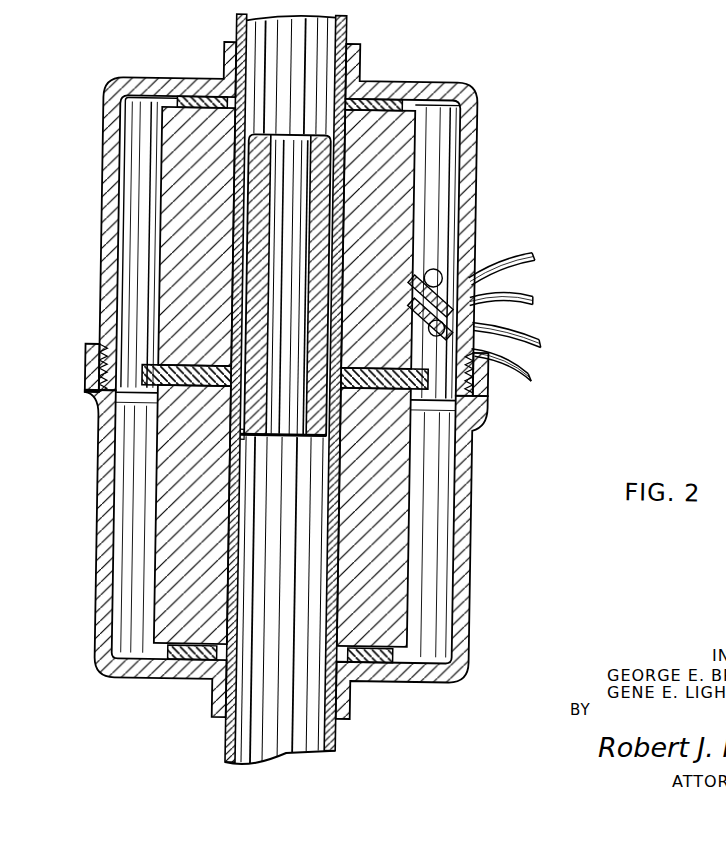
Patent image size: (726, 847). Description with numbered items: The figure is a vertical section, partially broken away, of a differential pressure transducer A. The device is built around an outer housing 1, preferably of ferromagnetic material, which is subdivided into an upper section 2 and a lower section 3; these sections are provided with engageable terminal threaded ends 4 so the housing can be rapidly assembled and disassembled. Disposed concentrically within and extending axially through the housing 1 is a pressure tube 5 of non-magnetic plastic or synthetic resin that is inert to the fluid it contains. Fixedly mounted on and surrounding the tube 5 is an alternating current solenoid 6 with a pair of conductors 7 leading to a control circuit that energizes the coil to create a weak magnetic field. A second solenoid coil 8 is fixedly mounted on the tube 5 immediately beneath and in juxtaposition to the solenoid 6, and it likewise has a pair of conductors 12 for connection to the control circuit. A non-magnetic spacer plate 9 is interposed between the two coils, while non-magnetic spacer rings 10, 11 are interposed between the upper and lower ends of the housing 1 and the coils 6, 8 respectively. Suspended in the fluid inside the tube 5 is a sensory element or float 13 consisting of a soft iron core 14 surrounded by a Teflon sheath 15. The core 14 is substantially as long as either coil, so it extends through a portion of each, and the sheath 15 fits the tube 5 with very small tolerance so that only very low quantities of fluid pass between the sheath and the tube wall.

The outer housing 1 is at (478, 187).
The upper section 2 is at (474, 147).
The lower section 3 is at (473, 554).
The terminal threaded ends 4 is at (490, 387).
The pressure tube 5 is at (343, 44).
The alternating current solenoid 6 is at (166, 285).
The conductors 7 is at (535, 376).
The second solenoid coil 8 is at (169, 502).
The non-magnetic spacer plate 9 is at (160, 369).
The non-magnetic spacer ring 10 is at (384, 98).
The non-magnetic spacer ring 11 is at (379, 651).
The conductors 12 is at (539, 296).
The sensory element (float or bob) 13 is at (318, 437).
The soft iron core 14 is at (293, 418).
The Teflon sheath 15 is at (246, 433).
The differential pressure transducer A is at (118, 73).